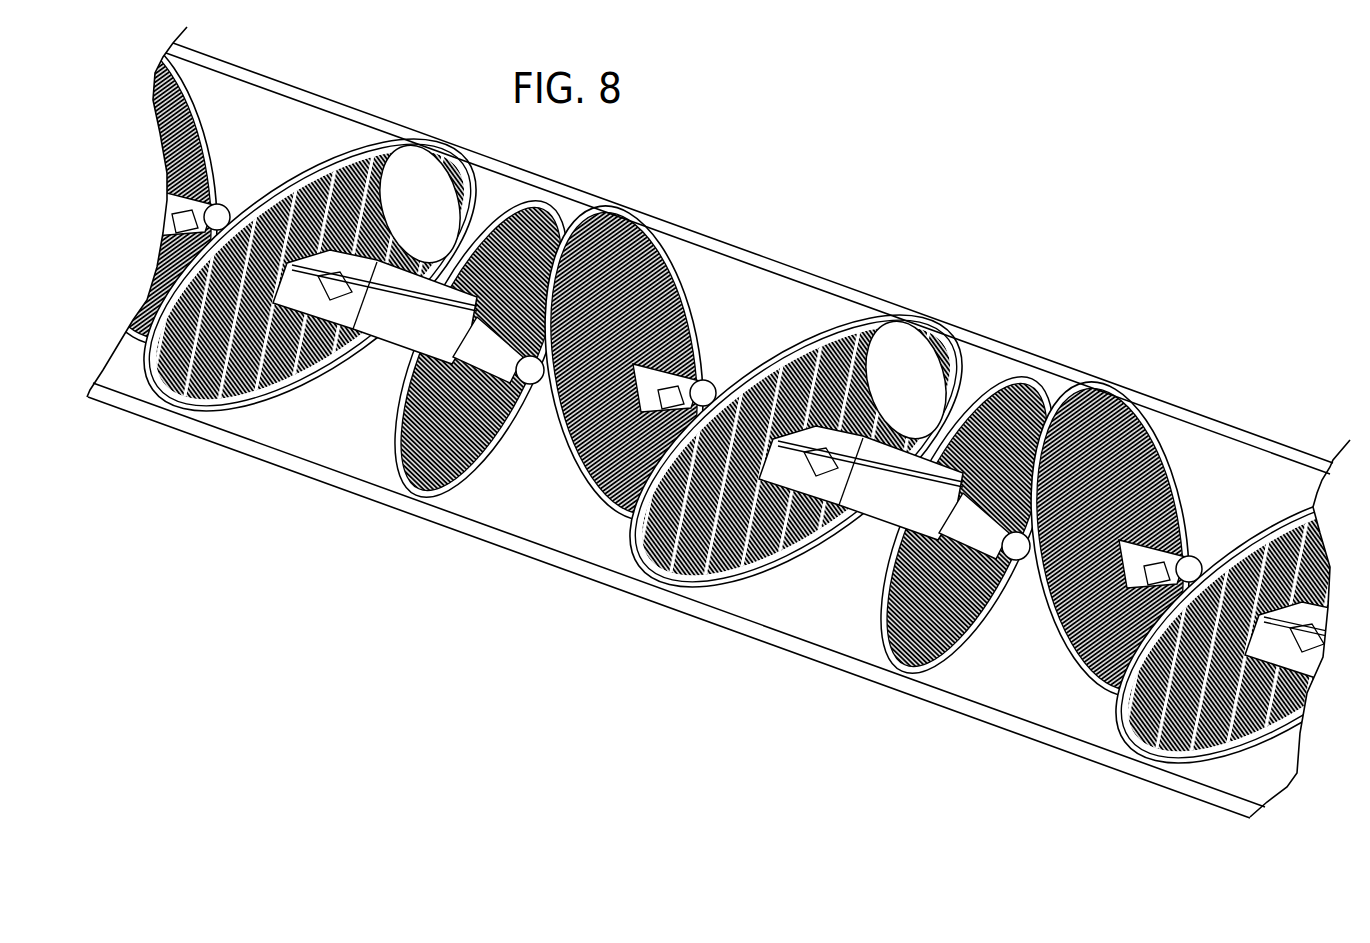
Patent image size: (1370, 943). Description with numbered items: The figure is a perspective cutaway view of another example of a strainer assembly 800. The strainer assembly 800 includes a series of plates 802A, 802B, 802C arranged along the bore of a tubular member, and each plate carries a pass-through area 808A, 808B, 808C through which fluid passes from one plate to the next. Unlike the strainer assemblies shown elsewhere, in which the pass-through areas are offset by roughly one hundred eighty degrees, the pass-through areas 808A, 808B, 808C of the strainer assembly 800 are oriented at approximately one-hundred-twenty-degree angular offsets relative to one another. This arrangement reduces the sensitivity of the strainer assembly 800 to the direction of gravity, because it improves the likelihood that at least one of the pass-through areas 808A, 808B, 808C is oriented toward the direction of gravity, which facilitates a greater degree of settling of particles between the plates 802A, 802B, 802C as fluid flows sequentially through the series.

The strainer assembly 800 is at (905, 230).
The plate 802A is at (1030, 385).
The plate 802B is at (847, 310).
The plate 802C is at (657, 247).
The pass-through area 808A is at (863, 620).
The pass-through area 808B is at (897, 357).
The pass-through area 808C is at (618, 522).